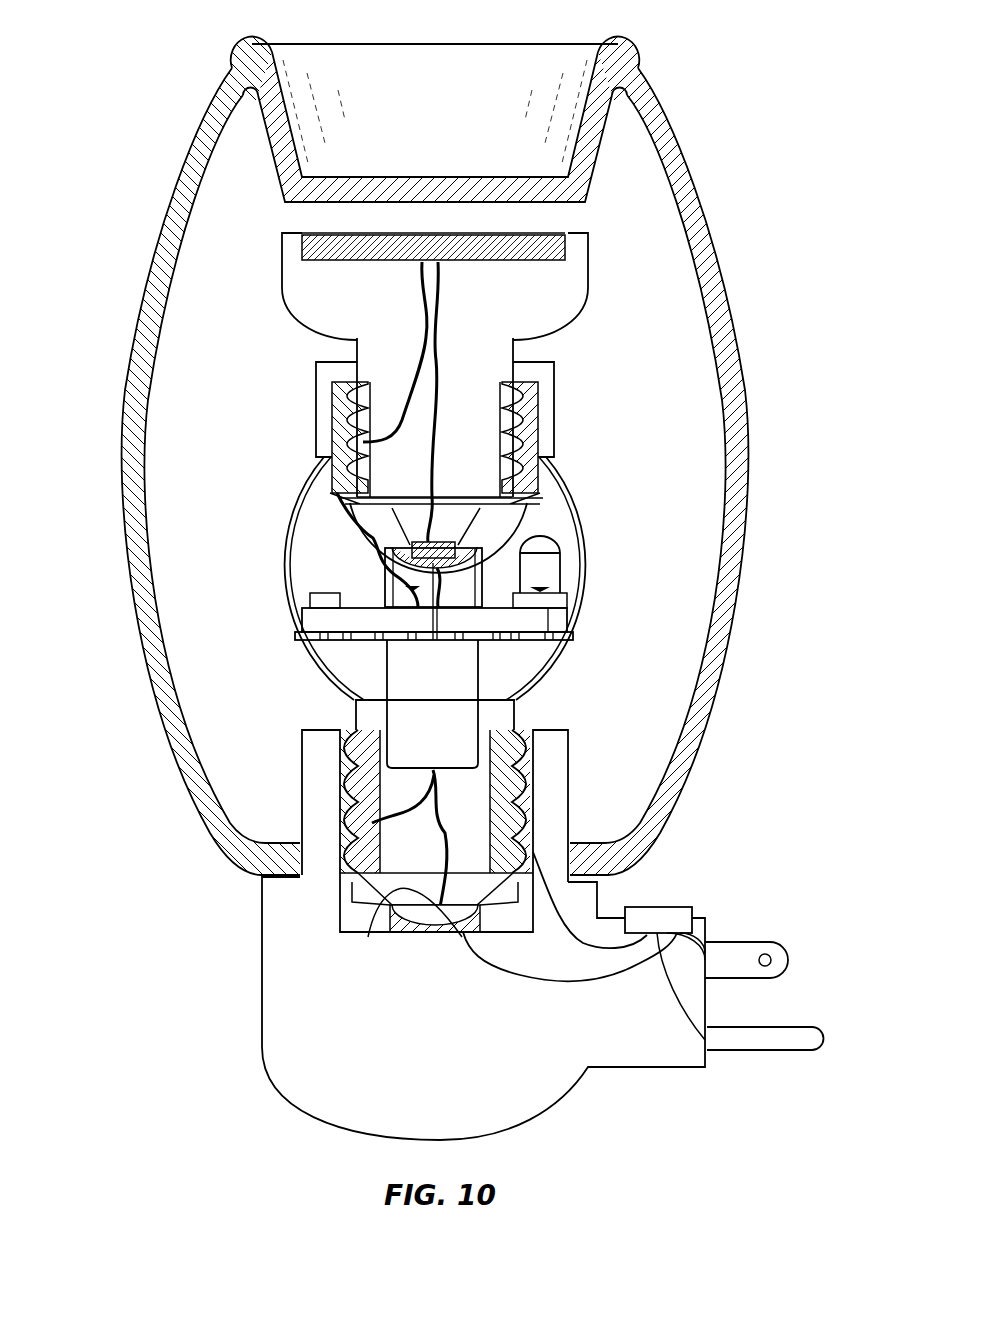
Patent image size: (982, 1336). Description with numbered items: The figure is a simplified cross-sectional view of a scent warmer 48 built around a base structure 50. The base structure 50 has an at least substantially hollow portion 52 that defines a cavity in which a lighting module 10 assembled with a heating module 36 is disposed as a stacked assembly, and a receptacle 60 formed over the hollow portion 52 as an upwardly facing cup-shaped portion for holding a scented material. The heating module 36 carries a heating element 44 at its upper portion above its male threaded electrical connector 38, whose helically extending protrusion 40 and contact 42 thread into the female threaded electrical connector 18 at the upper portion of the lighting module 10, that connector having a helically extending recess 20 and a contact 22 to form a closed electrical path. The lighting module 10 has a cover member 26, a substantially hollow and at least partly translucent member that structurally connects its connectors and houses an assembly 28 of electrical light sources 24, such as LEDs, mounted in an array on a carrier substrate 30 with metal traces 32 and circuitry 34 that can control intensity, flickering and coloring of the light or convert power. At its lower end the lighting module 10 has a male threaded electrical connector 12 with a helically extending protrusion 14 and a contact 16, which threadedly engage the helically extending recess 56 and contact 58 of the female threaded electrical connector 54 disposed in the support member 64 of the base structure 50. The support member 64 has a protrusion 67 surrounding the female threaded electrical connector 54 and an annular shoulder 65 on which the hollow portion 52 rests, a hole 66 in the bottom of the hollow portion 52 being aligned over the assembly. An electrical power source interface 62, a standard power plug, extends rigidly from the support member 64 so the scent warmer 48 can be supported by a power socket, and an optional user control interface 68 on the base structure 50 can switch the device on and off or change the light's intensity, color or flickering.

The lighting module 10 is at (604, 646).
The male threaded electrical connector 12 is at (522, 797).
The helically extending protrusion 14 is at (500, 837).
The contact 16 is at (400, 890).
The female threaded electrical connector 18 is at (327, 441).
The helically extending recess 20 is at (522, 413).
The contact 22 is at (418, 583).
The electrical light sources 24 is at (423, 580).
The cover member 26 is at (560, 490).
The assembly of electrical light sources 28 is at (356, 593).
The carrier substrate 30 is at (515, 622).
The metal traces 32 is at (403, 634).
The circuitry 34 is at (493, 640).
The heating module 36 is at (604, 313).
The male threaded electrical connector 38 is at (527, 394).
The helically extending protrusion 40 is at (333, 403).
The contact 42 is at (518, 522).
The heating element 44 is at (335, 250).
The scent warmer 48 is at (157, 186).
The base structure 50 is at (181, 916).
The substantially hollow portion 52 is at (122, 571).
The female threaded electrical connector 54 is at (328, 876).
The helically extending recess 56 is at (350, 805).
The contact 58 is at (415, 930).
The receptacle 60 is at (595, 125).
The electrical power source interface 62 is at (745, 952).
The support member 64 is at (325, 1020).
The annular shoulder 65 is at (598, 897).
The hole 66 is at (572, 860).
The protrusion 67 is at (320, 765).
The user control interface 68 is at (670, 917).